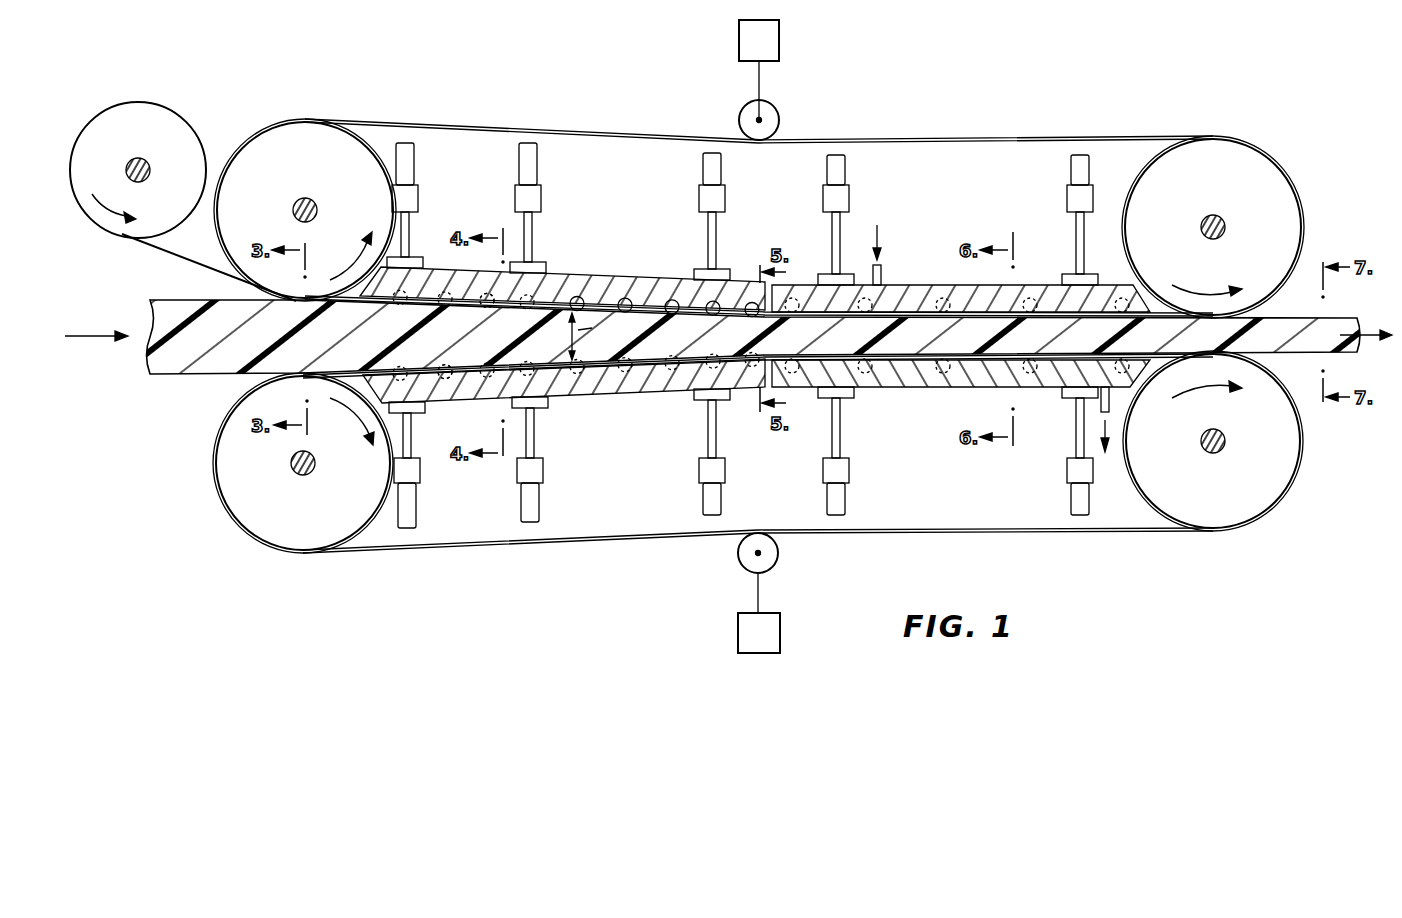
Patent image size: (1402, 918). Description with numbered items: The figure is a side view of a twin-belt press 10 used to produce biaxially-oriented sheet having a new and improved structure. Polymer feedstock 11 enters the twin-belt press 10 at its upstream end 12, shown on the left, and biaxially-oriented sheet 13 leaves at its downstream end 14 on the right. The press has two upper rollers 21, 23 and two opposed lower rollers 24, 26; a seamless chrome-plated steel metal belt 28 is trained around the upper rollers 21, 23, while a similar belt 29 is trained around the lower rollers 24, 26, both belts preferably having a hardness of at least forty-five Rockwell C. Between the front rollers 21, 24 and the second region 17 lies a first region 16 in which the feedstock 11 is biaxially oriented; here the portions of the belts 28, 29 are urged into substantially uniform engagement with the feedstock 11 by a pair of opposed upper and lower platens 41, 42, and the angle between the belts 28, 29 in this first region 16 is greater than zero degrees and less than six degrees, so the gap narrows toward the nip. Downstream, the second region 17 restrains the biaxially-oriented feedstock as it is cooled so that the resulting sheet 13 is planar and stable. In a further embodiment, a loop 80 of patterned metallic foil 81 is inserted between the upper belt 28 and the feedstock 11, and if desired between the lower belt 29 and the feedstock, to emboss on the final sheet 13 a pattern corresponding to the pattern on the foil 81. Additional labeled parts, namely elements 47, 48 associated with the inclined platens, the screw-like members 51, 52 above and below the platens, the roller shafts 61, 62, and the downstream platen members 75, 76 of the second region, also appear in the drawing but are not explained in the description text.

The twin-belt press 10 is at (563, 122).
The polymer feedstock 11 is at (180, 296).
The upstream end 12 is at (203, 403).
The biaxially-oriented sheet 13 is at (1308, 318).
The downstream end 14 is at (1285, 376).
The first region 16 is at (605, 221).
The second region 17 is at (940, 221).
The upper roller 21 is at (295, 171).
The upper roller 23 is at (1203, 189).
The lower roller 24 is at (293, 512).
The lower roller 26 is at (1203, 491).
The metal belt 28 is at (604, 130).
The belt 29 is at (566, 544).
The upper platen 41 is at (637, 281).
The lower platen 42 is at (606, 389).
The upper platen roller 47 is at (484, 306).
The lower platen roller 48 is at (440, 367).
The upper adjusting screw 51 is at (418, 198).
The lower adjusting screw 52 is at (421, 474).
The upper roller shaft 61 is at (292, 207).
The lower roller shaft 62 is at (291, 465).
The upper flat platen 75 is at (927, 287).
The lower flat platen 76 is at (918, 380).
The loop 80 is at (186, 121).
The patterned metallic foil 81 is at (208, 262).